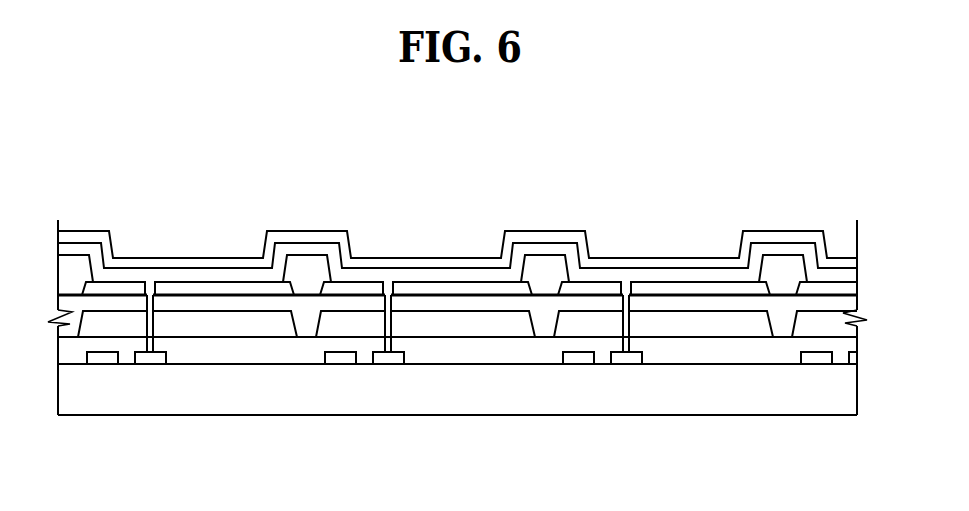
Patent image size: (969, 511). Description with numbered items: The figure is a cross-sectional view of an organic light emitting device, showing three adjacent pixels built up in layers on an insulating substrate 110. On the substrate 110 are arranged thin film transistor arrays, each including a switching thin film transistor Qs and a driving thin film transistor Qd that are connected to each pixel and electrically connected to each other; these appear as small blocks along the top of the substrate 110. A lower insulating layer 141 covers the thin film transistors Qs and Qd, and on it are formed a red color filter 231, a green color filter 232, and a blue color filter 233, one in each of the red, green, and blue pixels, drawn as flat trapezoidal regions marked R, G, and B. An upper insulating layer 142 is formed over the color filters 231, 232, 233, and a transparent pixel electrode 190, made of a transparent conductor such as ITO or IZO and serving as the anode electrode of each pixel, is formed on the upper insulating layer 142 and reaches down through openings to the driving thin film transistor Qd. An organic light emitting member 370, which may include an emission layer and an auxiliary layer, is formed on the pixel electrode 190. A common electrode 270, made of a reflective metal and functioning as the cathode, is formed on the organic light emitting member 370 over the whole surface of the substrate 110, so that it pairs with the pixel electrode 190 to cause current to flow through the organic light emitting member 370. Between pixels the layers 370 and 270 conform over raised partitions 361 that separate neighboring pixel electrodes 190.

The insulating substrate 110 is at (380, 397).
The lower insulating layer 141 is at (278, 364).
The upper insulating layer 142 is at (585, 302).
The pixel electrode 190 is at (708, 288).
The red color filter 231 is at (219, 325).
The green color filter 232 is at (478, 325).
The blue color filter 233 is at (713, 325).
The common electrode 270 is at (543, 234).
The partition 361 is at (305, 270).
The organic light emitting member 370 is at (632, 272).
The switching thin film transistor Qs is at (98, 364).
The driving thin film transistor Qd is at (150, 364).